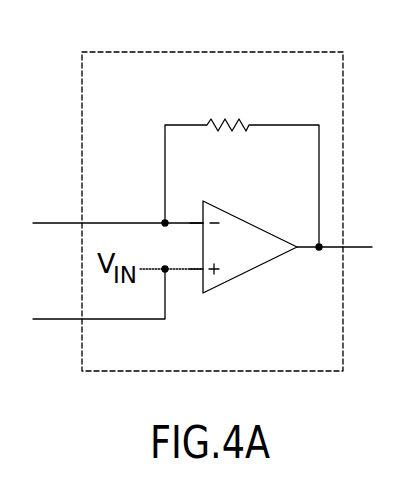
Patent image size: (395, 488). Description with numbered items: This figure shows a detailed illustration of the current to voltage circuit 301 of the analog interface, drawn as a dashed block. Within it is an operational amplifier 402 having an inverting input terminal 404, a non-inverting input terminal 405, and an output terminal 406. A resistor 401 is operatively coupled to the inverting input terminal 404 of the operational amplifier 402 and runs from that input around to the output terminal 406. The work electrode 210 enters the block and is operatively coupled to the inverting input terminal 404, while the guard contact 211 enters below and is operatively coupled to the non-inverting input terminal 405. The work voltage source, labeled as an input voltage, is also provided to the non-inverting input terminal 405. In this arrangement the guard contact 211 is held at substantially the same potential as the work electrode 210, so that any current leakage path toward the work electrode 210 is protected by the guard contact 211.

The current to voltage circuit 301 is at (181, 50).
The resistor 401 is at (241, 119).
The operational amplifier 402 is at (258, 268).
The inverting input terminal 404 is at (197, 220).
The non-inverting input terminal 405 is at (200, 272).
The output terminal 406 is at (318, 245).
The work electrode 210 is at (48, 218).
The guard contact 211 is at (52, 322).